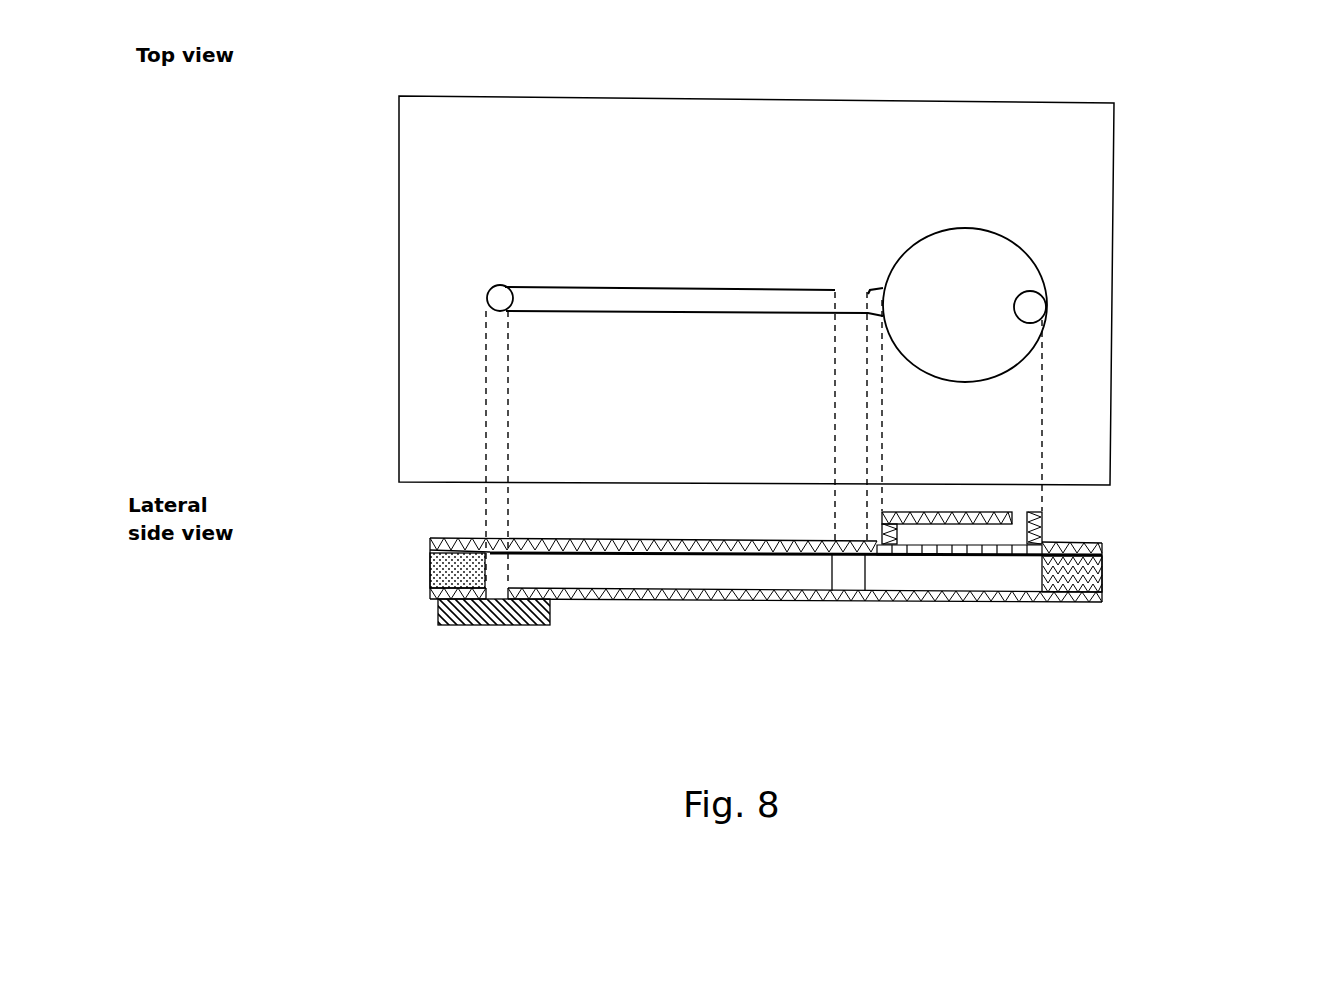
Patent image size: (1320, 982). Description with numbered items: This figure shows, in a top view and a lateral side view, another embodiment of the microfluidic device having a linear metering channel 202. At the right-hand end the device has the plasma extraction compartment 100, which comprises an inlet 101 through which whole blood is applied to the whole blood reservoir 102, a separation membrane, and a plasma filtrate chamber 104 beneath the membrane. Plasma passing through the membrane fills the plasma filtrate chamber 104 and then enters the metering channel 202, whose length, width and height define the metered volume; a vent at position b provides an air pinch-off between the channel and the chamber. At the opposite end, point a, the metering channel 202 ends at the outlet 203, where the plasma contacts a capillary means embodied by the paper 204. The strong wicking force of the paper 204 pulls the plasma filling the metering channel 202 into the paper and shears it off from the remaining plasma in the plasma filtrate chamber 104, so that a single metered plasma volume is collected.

The plasma extraction compartment 100 is at (1115, 232).
The inlet 101 is at (1036, 297).
The whole blood reservoir 102 is at (1012, 531).
The plasma filtrate chamber 104 is at (1073, 617).
The metering channel 202 is at (665, 570).
The outlet 203 is at (440, 573).
The paper 204 is at (430, 614).